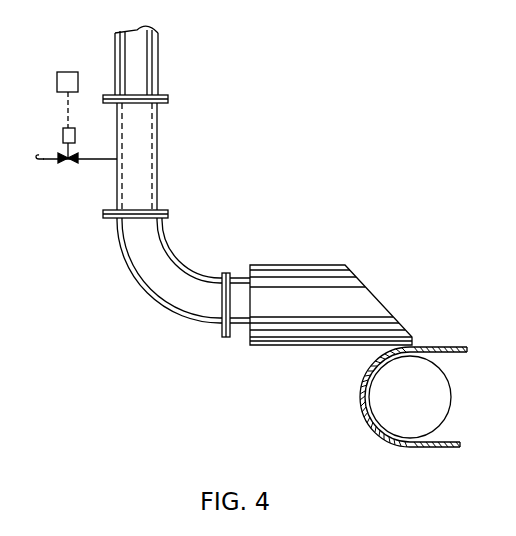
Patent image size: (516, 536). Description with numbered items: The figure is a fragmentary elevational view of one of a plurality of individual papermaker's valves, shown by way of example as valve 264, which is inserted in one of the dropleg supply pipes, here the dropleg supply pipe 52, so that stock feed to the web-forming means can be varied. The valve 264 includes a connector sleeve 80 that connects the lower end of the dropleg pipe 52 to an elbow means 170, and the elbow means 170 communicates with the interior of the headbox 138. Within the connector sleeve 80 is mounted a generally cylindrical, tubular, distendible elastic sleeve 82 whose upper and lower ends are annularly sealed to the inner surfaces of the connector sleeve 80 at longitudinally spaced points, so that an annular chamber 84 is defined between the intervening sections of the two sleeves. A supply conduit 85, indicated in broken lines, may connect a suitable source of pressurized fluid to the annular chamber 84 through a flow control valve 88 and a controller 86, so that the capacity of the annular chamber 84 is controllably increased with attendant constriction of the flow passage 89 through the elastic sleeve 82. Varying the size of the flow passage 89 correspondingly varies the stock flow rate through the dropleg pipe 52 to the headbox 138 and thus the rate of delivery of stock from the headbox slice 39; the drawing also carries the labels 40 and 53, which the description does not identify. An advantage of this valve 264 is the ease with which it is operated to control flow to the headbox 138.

The dropleg supply pipe 52 is at (158, 53).
The connector sleeve 80 is at (162, 120).
The elastic sleeve 82 is at (156, 130).
The annular chamber 84 is at (120, 127).
The controller 86 is at (70, 72).
The supply conduit 85 is at (50, 159).
The flow control valve 88 is at (67, 165).
The flow passage 89 is at (138, 182).
The valve 264 is at (172, 162).
The elbow means 170 is at (167, 243).
The headbox 138 is at (290, 265).
The headbox slice 39 is at (412, 335).
The web 40 is at (463, 350).
The reference 53 is at (515, 118).